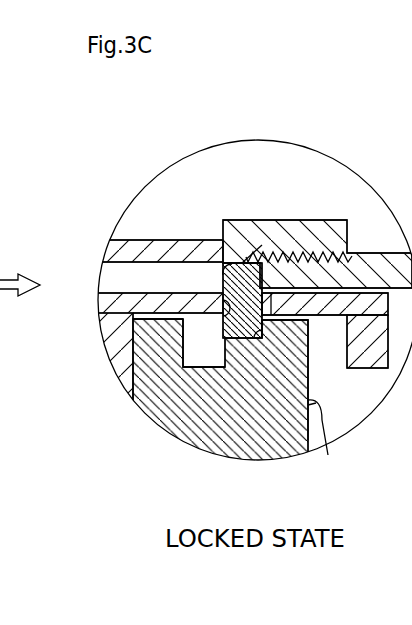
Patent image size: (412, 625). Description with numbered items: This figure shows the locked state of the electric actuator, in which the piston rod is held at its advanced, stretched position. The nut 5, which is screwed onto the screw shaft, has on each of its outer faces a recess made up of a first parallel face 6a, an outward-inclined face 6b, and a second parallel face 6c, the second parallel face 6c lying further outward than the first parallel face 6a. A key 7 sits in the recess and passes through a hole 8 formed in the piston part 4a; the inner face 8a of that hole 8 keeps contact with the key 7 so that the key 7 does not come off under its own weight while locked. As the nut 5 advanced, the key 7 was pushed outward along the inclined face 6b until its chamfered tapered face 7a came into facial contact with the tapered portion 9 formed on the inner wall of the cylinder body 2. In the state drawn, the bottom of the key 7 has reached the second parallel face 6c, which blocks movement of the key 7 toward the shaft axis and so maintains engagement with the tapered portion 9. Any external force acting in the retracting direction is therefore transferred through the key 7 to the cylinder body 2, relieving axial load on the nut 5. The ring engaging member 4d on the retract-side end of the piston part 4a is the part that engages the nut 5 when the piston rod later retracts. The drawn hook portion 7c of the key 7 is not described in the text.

The cylinder body 2 is at (262, 210).
The piston part 4a is at (163, 297).
The engaging member 4d is at (382, 343).
The nut 5 is at (315, 405).
The first parallel face 6a is at (203, 367).
The inclined face 6b is at (228, 345).
The second parallel face 6c is at (263, 327).
The key 7 is at (236, 247).
The tapered face 7a is at (268, 252).
The hook of lock member 7c is at (316, 405).
The hole 8 is at (307, 298).
The inner face 8a is at (133, 320).
The tapered portion 9 is at (223, 273).